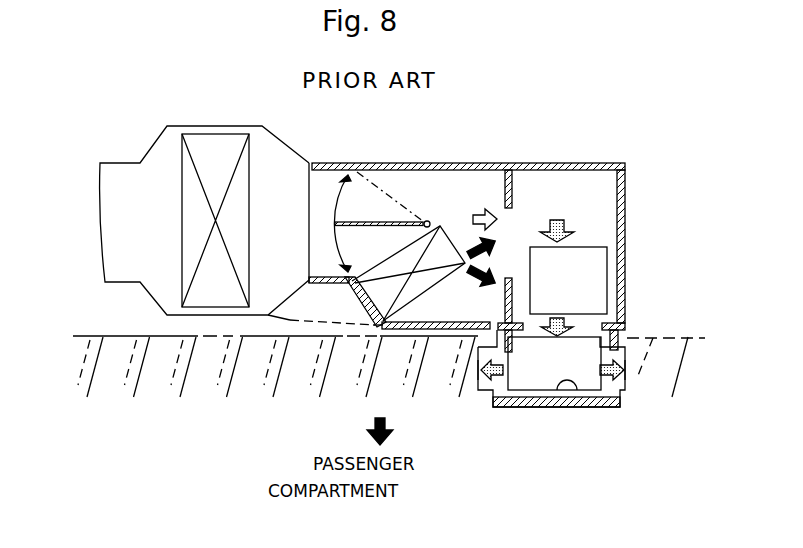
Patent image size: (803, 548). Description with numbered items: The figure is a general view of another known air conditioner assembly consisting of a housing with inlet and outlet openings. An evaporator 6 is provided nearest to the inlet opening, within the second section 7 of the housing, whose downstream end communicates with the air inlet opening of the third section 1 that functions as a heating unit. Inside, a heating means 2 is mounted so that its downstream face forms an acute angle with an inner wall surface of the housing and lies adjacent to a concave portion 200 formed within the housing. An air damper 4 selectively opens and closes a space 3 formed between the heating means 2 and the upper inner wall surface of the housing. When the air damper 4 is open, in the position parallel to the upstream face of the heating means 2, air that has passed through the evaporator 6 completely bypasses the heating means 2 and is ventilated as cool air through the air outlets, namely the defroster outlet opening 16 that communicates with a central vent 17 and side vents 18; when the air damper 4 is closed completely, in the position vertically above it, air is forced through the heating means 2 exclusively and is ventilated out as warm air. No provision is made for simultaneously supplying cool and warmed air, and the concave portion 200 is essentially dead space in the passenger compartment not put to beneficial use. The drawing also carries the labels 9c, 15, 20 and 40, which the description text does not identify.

The third section 1 is at (400, 330).
The heating means 2 is at (447, 282).
The space 3 is at (400, 192).
The air damper 4 is at (356, 221).
The evaporator 6 is at (181, 208).
The second section 7 is at (117, 286).
The vehicle floor 9c is at (303, 328).
The ground / body panel 15 is at (383, 368).
The defroster outlet opening 16 is at (562, 247).
The central vent 17 is at (578, 390).
The side vents 18 is at (630, 367).
The blower fan 20 is at (370, 298).
The blower inlet 40 is at (350, 281).
The concave portion 200 is at (349, 306).